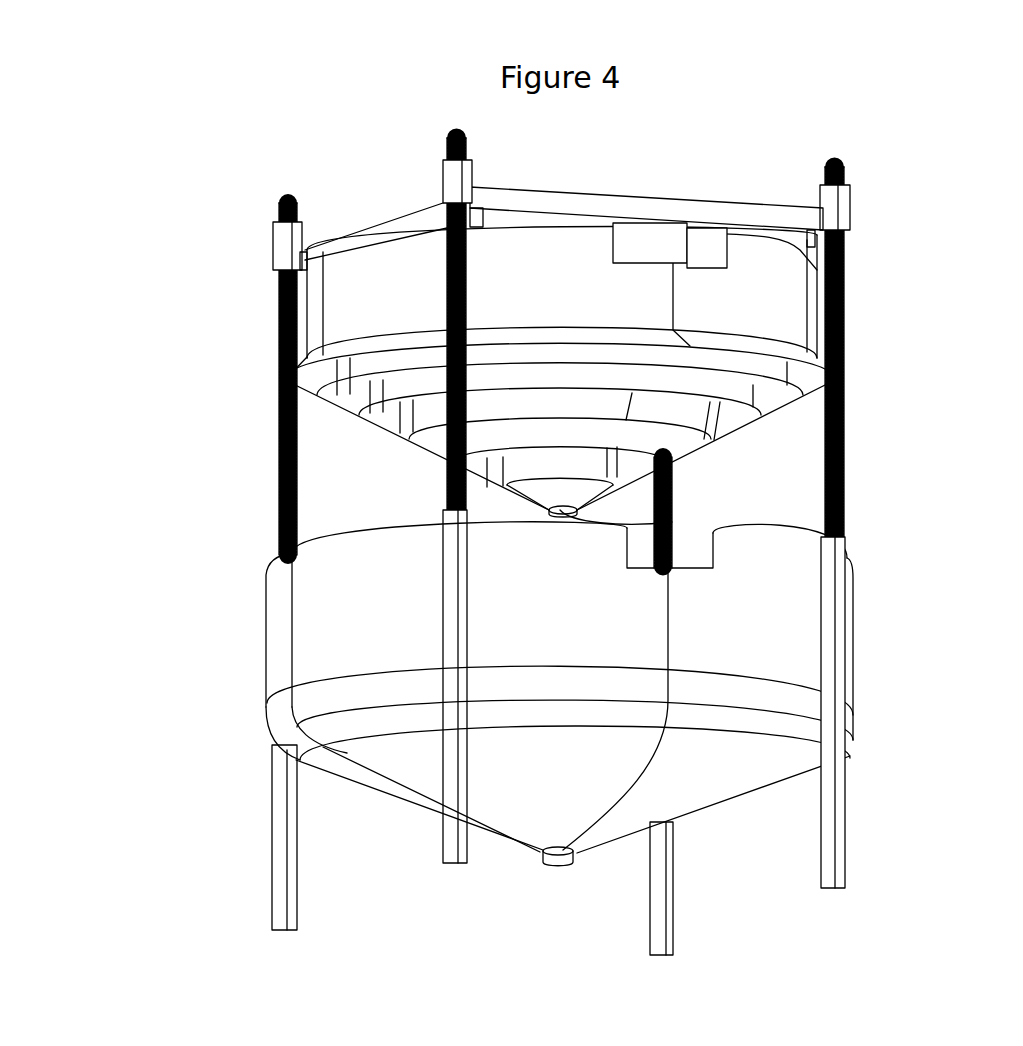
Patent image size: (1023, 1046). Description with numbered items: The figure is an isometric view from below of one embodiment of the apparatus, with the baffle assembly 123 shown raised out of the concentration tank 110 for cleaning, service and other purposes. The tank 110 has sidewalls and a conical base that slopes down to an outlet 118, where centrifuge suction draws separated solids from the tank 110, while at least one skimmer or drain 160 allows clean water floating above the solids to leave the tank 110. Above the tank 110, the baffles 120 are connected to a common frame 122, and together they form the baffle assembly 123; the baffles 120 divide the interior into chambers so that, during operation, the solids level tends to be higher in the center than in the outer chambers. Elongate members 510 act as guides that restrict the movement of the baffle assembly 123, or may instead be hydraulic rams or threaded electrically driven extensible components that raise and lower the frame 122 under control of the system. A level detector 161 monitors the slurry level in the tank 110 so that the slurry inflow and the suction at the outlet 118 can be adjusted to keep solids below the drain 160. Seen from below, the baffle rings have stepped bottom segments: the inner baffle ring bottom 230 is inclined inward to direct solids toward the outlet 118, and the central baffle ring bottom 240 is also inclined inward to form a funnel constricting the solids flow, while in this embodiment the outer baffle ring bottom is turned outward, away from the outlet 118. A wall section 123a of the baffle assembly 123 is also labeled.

The elongate members 510 is at (290, 203).
The baffles 120 is at (333, 318).
The common frame 122 is at (672, 200).
The level detector 161 is at (843, 283).
The baffle assembly 123 is at (823, 386).
The hopper wall section 123a is at (597, 330).
The inner baffle ring bottom 230 is at (675, 433).
The central baffle ring bottom 240 is at (672, 522).
The concentration tank 110 is at (282, 627).
The outlet 118 is at (545, 862).
The skimmer or drain 160 is at (693, 570).